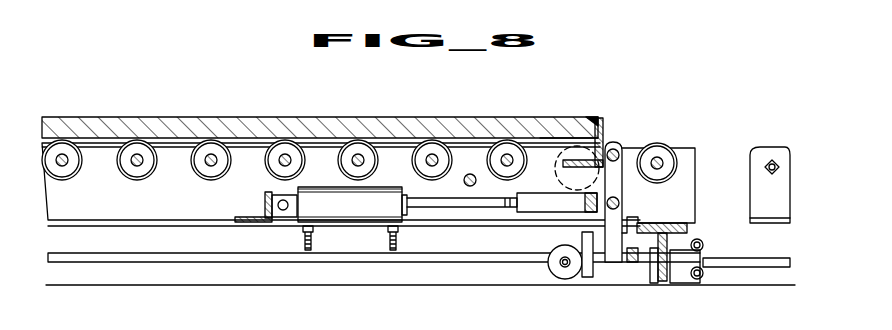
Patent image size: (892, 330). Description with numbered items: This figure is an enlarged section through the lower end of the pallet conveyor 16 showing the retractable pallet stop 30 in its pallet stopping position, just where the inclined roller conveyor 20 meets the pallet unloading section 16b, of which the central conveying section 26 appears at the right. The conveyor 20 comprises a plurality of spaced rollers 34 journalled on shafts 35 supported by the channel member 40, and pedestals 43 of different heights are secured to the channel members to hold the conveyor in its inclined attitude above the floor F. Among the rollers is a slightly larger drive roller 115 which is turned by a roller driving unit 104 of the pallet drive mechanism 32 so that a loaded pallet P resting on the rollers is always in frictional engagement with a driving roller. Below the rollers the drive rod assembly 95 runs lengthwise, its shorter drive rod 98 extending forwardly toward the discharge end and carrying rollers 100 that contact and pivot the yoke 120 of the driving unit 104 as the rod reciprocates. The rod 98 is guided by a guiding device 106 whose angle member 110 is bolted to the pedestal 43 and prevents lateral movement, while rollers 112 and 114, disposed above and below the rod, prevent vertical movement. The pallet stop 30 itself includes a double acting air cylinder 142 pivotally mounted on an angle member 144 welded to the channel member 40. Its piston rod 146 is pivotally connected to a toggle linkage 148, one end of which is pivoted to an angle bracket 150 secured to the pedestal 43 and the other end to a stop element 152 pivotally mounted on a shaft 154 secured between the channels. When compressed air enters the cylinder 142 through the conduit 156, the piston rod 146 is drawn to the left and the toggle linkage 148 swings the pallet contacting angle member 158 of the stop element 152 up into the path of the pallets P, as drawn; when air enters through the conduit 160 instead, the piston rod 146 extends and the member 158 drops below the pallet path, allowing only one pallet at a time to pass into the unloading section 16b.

The pallet conveyor 16 is at (168, 110).
The pallet unloading section 16b is at (757, 147).
The pallet P is at (285, 117).
The floor F is at (62, 285).
The roller conveyor 20 is at (123, 224).
The central conveying section 26 is at (752, 176).
The pallet stop 30 is at (611, 128).
The pallet drive mechanism 32 is at (240, 263).
The rollers 34 is at (70, 177).
The shafts 35 is at (139, 165).
The channel member 40 is at (143, 215).
The pedestal 43 is at (655, 283).
The drive rod assembly 95 is at (190, 263).
The drive rod 98 is at (275, 263).
The rollers 100 is at (548, 269).
The roller driving unit 104 is at (579, 234).
The guiding device 106 is at (701, 258).
The angle member 110 is at (683, 283).
The roller 112 is at (699, 240).
The roller 114 is at (703, 280).
The drive roller 115 is at (556, 140).
The yoke 120 is at (587, 278).
The double acting air cylinder 142 is at (329, 223).
The angle member 144 is at (236, 225).
The piston rod 146 is at (418, 208).
The toggle linkage 148 is at (623, 218).
The angle bracket 150 is at (678, 222).
The stop element 152 is at (538, 165).
The shaft 154 is at (468, 174).
The conduit 156 is at (390, 250).
The pallet contacting angle member 158 is at (603, 125).
The conduit 160 is at (304, 250).